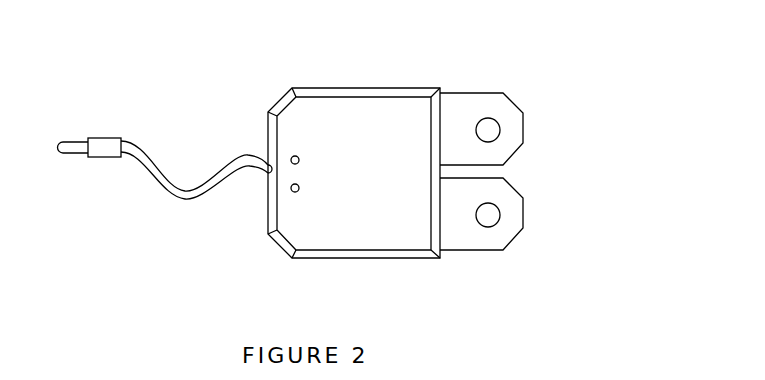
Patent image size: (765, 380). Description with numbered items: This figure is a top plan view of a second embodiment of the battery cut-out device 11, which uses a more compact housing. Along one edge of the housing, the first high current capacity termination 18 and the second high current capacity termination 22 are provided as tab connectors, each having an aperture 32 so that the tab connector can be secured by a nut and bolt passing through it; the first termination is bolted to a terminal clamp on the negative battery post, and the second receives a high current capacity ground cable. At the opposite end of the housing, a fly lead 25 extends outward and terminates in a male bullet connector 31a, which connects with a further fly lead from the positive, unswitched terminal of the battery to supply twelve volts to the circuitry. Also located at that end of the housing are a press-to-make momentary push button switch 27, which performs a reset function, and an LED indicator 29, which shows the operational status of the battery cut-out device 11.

The battery cut-out device 11 is at (538, 291).
The first high current capacity termination 18 is at (472, 102).
The second high current capacity termination 22 is at (468, 242).
The fly lead 25 is at (181, 194).
The press-to-make momentary push button switch 27 is at (290, 193).
The LED indicator 29 is at (290, 157).
The male bullet connector 31a is at (77, 133).
The aperture 32 is at (500, 124).